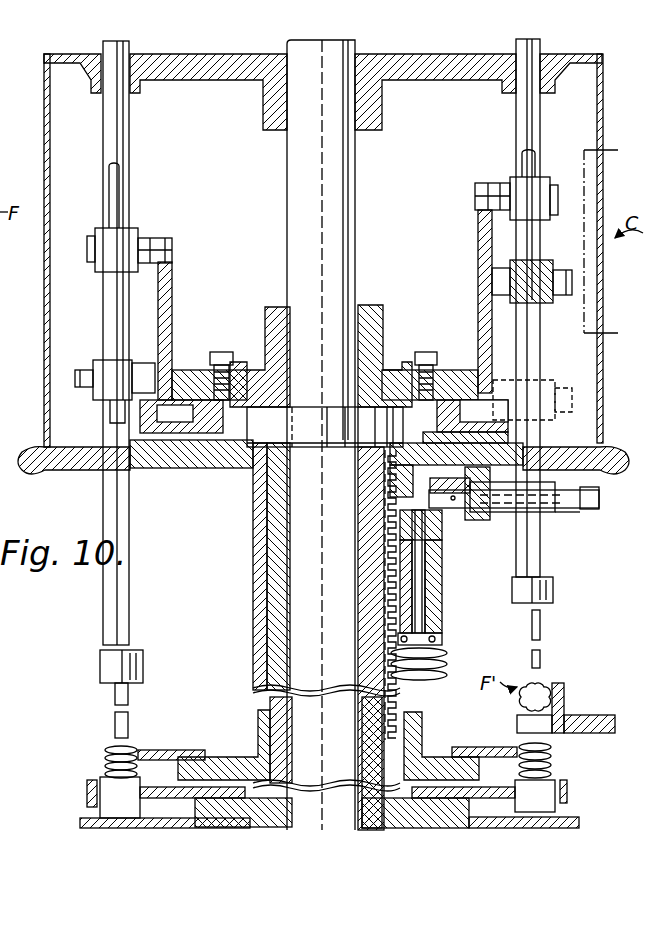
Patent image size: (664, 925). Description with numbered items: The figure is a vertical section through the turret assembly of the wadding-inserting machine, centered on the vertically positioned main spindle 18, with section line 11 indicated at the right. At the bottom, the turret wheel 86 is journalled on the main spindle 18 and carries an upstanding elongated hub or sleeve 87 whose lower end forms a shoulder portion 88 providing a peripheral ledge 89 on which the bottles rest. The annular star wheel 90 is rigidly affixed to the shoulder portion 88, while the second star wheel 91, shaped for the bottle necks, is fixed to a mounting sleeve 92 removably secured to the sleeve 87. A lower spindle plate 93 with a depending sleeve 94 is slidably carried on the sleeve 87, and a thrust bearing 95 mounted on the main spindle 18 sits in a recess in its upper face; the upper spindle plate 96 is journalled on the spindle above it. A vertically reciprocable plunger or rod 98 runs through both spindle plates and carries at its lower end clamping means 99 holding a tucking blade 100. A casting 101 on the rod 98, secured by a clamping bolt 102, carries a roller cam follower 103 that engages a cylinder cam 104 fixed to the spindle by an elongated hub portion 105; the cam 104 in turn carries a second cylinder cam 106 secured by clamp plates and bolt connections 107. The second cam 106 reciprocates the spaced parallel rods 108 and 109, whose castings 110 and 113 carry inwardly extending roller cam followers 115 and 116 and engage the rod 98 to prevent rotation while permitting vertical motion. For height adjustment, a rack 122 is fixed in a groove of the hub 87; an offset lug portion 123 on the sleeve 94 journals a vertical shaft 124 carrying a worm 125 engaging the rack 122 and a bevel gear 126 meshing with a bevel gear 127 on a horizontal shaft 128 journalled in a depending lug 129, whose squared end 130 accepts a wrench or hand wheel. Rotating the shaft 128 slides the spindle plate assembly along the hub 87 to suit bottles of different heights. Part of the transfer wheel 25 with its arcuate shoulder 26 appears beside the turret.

The section line 11 is at (614, 246).
The main spindle 18 is at (297, 205).
The transfer wheel 25 is at (600, 702).
The arcuate shoulder 26 is at (520, 708).
The turret wheel 86 is at (588, 810).
The hub or sleeve 87 is at (290, 607).
The shoulder portion 88 is at (195, 810).
The peripheral ledge 89 is at (85, 820).
The star wheel 90 is at (515, 785).
The second star wheel 91 is at (190, 752).
The mounting sleeve 92 is at (260, 745).
The lower spindle plate 93 is at (197, 468).
The depending sleeve 94 is at (258, 574).
The thrust bearing 95 is at (298, 422).
The upper spindle plate 96 is at (212, 80).
The plunger or rod 98 is at (129, 510).
The clamping means 99 is at (135, 665).
The tucking blade 100 is at (128, 720).
The casting 101 is at (95, 372).
The clamping bolt 102 is at (83, 388).
The roller cam follower 103 is at (157, 363).
The cylinder cam 104 is at (505, 315).
The hub portion 105 is at (272, 308).
The second cylinder cam 106 is at (172, 298).
The clamp plates and bolt connections 107 is at (248, 352).
The rod 108 is at (523, 165).
The rod 109 is at (118, 172).
The casting 110 is at (545, 180).
The casting 113 is at (128, 238).
The roller cam follower 115 is at (478, 195).
The roller cam follower 116 is at (162, 245).
The rack 122 is at (398, 698).
The offset lug portion 123 is at (440, 592).
The shaft 124 is at (425, 622).
The worm 125 is at (449, 655).
The bevel gear 126 is at (440, 533).
The bevel gear 127 is at (450, 518).
The horizontal shaft 128 is at (565, 500).
The lug 129 is at (555, 515).
The squared end 130 is at (600, 508).